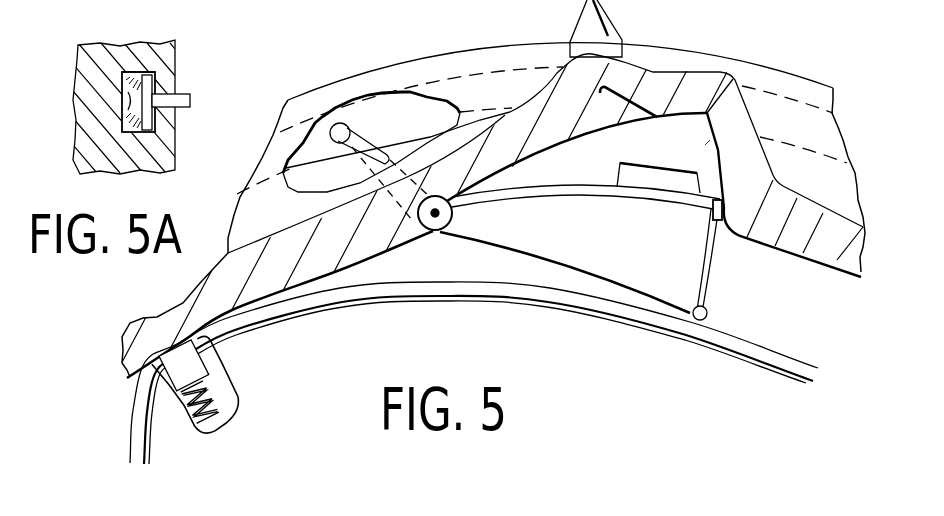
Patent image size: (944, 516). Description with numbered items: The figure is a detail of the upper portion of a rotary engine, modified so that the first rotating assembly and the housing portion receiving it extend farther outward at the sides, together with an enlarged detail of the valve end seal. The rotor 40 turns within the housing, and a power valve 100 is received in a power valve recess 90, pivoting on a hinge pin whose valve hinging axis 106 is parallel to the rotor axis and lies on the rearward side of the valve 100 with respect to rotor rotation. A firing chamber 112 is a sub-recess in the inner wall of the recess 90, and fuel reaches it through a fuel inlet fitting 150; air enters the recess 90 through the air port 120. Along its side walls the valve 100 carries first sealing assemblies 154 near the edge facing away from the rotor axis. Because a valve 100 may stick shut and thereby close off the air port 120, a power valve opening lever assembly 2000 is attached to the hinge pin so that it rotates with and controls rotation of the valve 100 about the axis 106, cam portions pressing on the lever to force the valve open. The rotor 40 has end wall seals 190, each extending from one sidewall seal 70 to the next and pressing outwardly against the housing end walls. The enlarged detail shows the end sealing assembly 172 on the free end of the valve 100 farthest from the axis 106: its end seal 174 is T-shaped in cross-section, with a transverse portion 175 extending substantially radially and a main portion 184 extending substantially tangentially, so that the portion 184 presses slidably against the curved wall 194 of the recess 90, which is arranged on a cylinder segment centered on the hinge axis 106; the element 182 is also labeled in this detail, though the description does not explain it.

In FIG. 5, the rotor 40 is at (698, 355).
In FIG. 5, the sidewall seal 70 is at (207, 361).
In FIG. 5, the power valve recess 90 is at (708, 130).
In FIG. 5A, the power valve 100 is at (183, 147).
In FIG. 5, the power valve 100 is at (537, 247).
In FIG. 5, the valve hinging axis 106 is at (433, 222).
In FIG. 5, the firing chamber 112 is at (611, 102).
In FIG. 5, the air port 120 is at (683, 182).
In FIG. 5, the fuel inlet fitting 150 is at (607, 16).
In FIG. 5, the first sealing assembly 154 is at (667, 212).
In FIG. 5A, the end sealing assembly 172 is at (195, 114).
In FIG. 5, the end sealing assembly 172 is at (729, 206).
In FIG. 5A, the end seal 174 is at (185, 87).
In FIG. 5A, the transverse portion 175 is at (152, 44).
In FIG. 5A, the bushing 182 is at (130, 100).
In FIG. 5A, the main portion 184 is at (191, 100).
In FIG. 5, the end wall seal 190 is at (153, 456).
In FIG. 5, the curved wall 194 is at (713, 137).
In FIG. 5, the power valve opening lever assembly 2000 is at (358, 132).